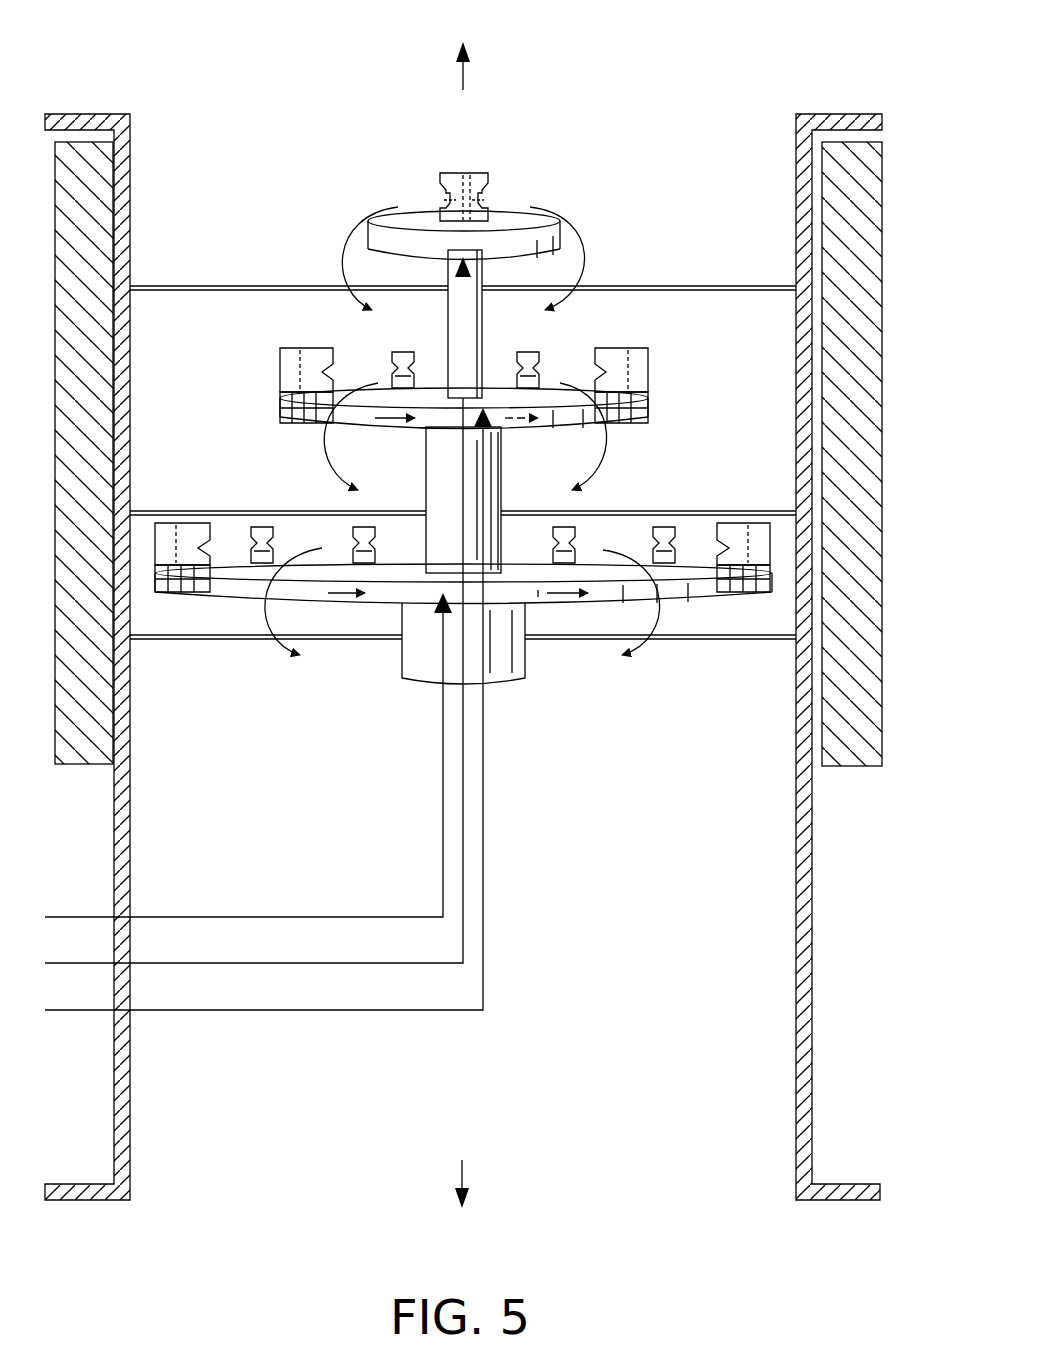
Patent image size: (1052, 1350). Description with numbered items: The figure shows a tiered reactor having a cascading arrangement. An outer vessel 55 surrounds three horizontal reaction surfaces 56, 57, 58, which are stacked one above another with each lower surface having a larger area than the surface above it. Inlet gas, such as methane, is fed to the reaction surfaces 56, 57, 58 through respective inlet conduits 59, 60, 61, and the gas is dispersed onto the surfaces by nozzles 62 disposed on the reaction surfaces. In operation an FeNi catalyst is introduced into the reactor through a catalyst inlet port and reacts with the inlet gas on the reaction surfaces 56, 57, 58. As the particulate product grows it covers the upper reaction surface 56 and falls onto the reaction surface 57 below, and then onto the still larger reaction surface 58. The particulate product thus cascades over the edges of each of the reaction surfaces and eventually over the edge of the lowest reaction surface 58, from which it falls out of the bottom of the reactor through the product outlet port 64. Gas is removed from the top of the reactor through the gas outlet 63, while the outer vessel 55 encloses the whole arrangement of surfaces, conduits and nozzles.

The outer vessel 55 is at (832, 114).
The reaction surface 56 is at (512, 210).
The reaction surface 57 is at (548, 383).
The reaction surface 58 is at (590, 562).
The inlet conduit 59 is at (302, 915).
The inlet conduit 60 is at (352, 962).
The inlet conduit 61 is at (385, 1012).
The nozzle 62 is at (442, 173).
The gas outlet 63 is at (465, 51).
The product outlet port 64 is at (464, 1201).